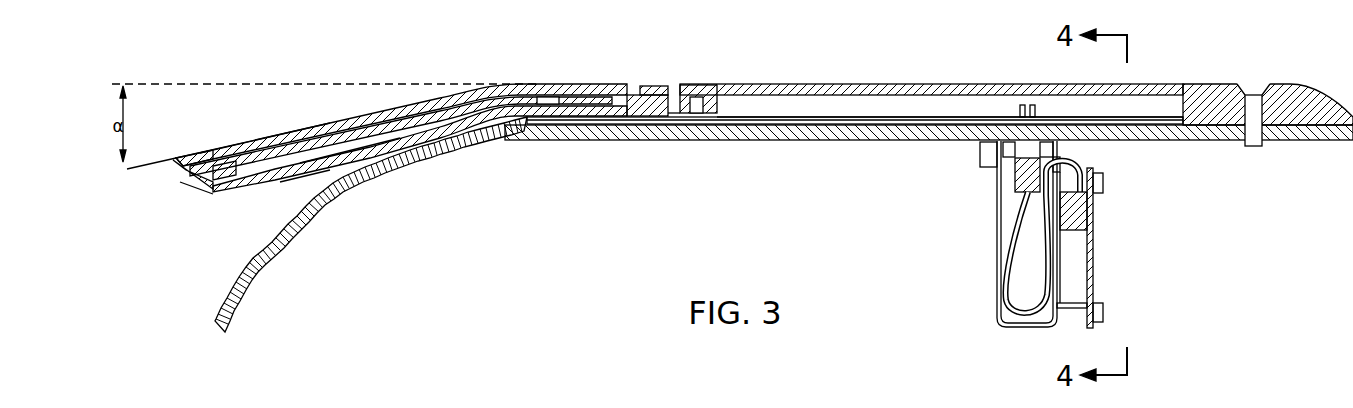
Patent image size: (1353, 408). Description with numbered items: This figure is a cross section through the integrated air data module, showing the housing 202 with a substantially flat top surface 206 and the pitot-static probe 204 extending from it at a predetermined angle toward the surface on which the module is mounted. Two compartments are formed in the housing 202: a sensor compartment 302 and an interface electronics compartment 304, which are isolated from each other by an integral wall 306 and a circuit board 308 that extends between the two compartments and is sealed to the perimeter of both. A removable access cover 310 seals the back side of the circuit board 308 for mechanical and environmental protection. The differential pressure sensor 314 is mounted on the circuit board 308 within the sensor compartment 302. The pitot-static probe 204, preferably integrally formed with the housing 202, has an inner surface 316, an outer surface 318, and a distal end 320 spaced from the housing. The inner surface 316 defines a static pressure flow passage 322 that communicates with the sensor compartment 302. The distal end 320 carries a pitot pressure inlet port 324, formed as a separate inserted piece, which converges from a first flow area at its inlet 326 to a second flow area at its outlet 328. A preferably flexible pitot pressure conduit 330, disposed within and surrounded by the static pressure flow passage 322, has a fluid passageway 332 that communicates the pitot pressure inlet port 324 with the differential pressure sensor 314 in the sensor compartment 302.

The housing 202 is at (1210, 92).
The pitot-static probe 204 is at (245, 140).
The top surface 206 is at (840, 85).
The sensor compartment 302 is at (673, 110).
The interface electronics compartment 304 is at (960, 104).
The integral wall 306 is at (703, 108).
The circuit board 308 is at (836, 130).
The removable access cover 310 is at (923, 127).
The differential pressure sensor 314 is at (645, 105).
The inner surface 316 is at (377, 118).
The outer surface 318 is at (267, 183).
The distal end 320 is at (197, 157).
The static pressure flow passage 322 is at (430, 143).
The pitot pressure inlet port 324 is at (205, 187).
The inlet 326 is at (183, 180).
The outlet 328 is at (222, 168).
The pitot pressure conduit 330 is at (378, 140).
The fluid passageway 332 is at (457, 112).